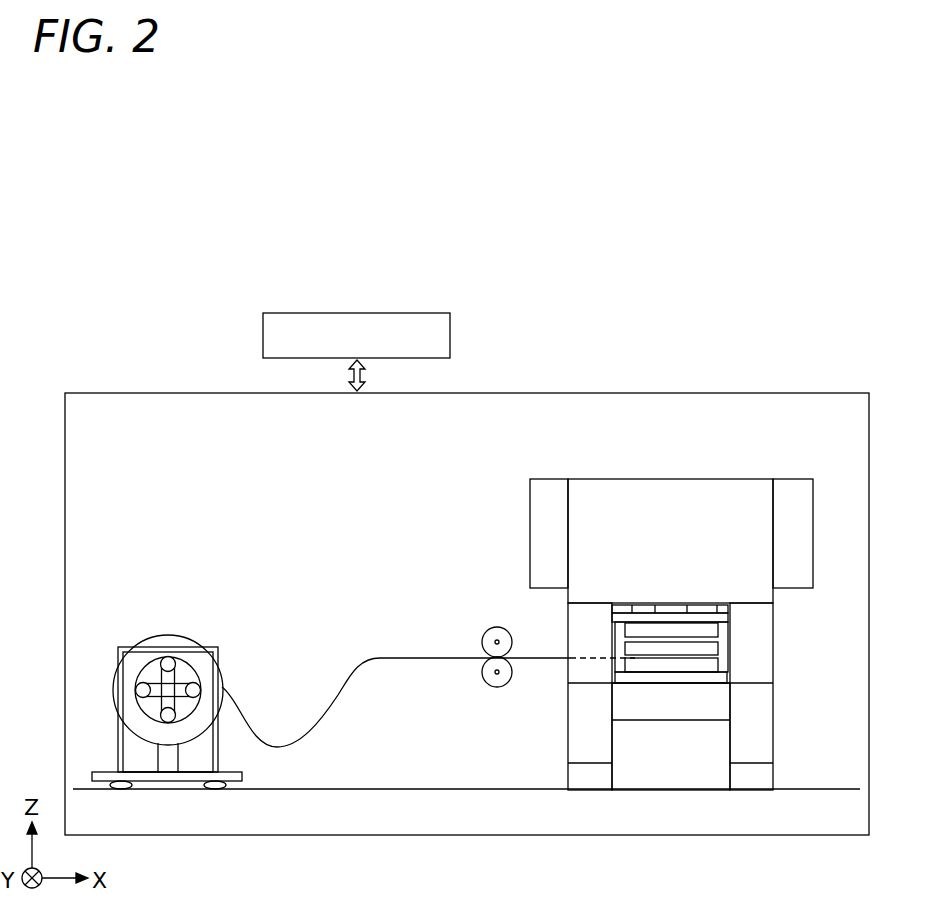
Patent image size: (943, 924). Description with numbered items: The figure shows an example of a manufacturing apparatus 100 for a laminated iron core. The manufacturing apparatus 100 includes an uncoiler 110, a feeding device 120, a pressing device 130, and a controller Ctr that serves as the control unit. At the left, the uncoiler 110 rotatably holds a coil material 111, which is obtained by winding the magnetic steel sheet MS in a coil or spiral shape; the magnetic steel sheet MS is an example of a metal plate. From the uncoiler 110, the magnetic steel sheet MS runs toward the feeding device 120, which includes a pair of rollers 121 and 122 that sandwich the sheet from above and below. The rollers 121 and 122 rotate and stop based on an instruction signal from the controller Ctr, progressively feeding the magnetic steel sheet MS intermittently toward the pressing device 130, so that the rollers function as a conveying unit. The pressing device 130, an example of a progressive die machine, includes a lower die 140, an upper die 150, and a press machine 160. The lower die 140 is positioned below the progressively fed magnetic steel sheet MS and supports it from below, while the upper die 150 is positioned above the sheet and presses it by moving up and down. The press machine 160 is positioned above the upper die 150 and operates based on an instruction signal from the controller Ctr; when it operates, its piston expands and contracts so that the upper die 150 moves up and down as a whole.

The manufacturing apparatus 100 is at (203, 383).
The controller Ctr is at (452, 330).
The uncoiler 110 is at (130, 647).
The coil material 111 is at (170, 636).
The magnetic steel sheet MS is at (240, 707).
The feeding device 120 is at (479, 657).
The roller 121 is at (500, 627).
The roller 122 is at (498, 688).
The pressing device 130 is at (692, 606).
The lower die 140 is at (740, 670).
The upper die 150 is at (737, 632).
The press machine 160 is at (678, 478).